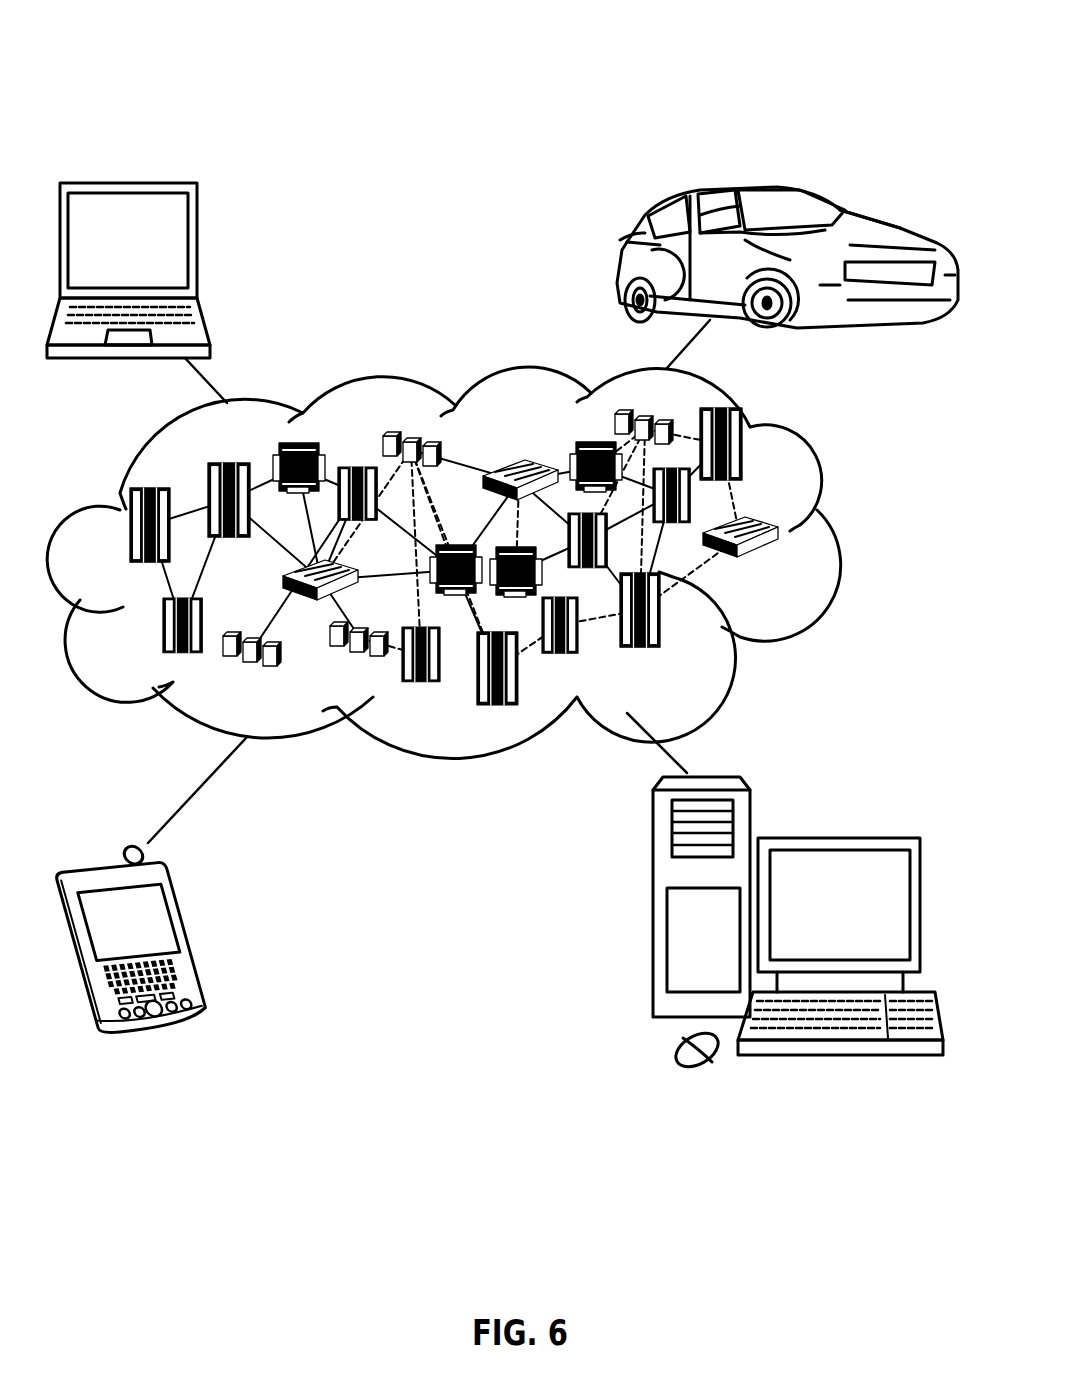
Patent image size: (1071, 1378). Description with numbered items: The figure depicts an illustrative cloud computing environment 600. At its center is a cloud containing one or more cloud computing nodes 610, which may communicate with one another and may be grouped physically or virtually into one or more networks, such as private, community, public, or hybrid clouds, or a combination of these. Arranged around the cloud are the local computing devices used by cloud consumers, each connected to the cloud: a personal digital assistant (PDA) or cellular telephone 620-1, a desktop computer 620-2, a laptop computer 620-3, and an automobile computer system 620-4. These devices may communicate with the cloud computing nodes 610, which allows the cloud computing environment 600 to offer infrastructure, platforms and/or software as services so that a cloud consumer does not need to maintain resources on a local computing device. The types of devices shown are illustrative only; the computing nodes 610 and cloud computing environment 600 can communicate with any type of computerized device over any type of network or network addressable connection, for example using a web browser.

The cloud computing environment 600 is at (785, 40).
The cloud computing nodes 610 is at (472, 562).
The personal digital assistant (PDA) or cellular telephone 620-1 is at (188, 937).
The desktop computer 620-2 is at (837, 838).
The laptop computer 620-3 is at (198, 252).
The automobile computer system 620-4 is at (624, 265).